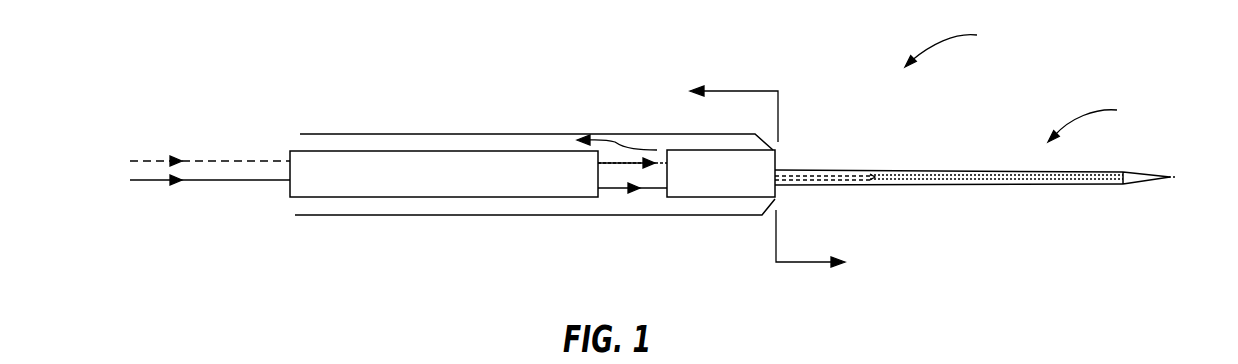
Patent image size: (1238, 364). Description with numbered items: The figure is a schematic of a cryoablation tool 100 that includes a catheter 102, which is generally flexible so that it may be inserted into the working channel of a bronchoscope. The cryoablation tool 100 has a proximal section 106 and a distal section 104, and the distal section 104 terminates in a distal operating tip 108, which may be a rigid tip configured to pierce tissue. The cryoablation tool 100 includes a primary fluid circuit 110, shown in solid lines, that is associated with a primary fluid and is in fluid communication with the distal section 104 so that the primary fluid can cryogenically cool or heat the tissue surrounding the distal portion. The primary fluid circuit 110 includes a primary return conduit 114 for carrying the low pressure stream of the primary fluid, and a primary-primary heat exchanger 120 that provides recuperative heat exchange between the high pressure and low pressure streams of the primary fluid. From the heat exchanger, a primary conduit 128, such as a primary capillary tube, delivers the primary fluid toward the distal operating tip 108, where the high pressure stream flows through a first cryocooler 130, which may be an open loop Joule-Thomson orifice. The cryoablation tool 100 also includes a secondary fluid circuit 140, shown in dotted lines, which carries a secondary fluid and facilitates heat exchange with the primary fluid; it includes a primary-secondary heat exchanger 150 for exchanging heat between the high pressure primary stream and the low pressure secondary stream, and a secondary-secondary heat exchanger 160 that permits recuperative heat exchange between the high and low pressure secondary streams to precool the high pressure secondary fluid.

The cryoablation tool 100 is at (959, 44).
The catheter 102 is at (1101, 118).
The distal section 104 is at (812, 265).
The proximal section 106 is at (722, 90).
The distal operating tip 108 is at (1148, 175).
The primary fluid circuit 110 is at (230, 180).
The primary return conduit 114 is at (643, 212).
The primary-primary heat exchanger 120 is at (855, 178).
The primary conduit 128 is at (1007, 178).
The first cryocooler 130 is at (1102, 175).
The secondary fluid circuit 140 is at (237, 160).
The primary-secondary heat exchanger 150 is at (707, 193).
The secondary-secondary heat exchanger 160 is at (583, 193).